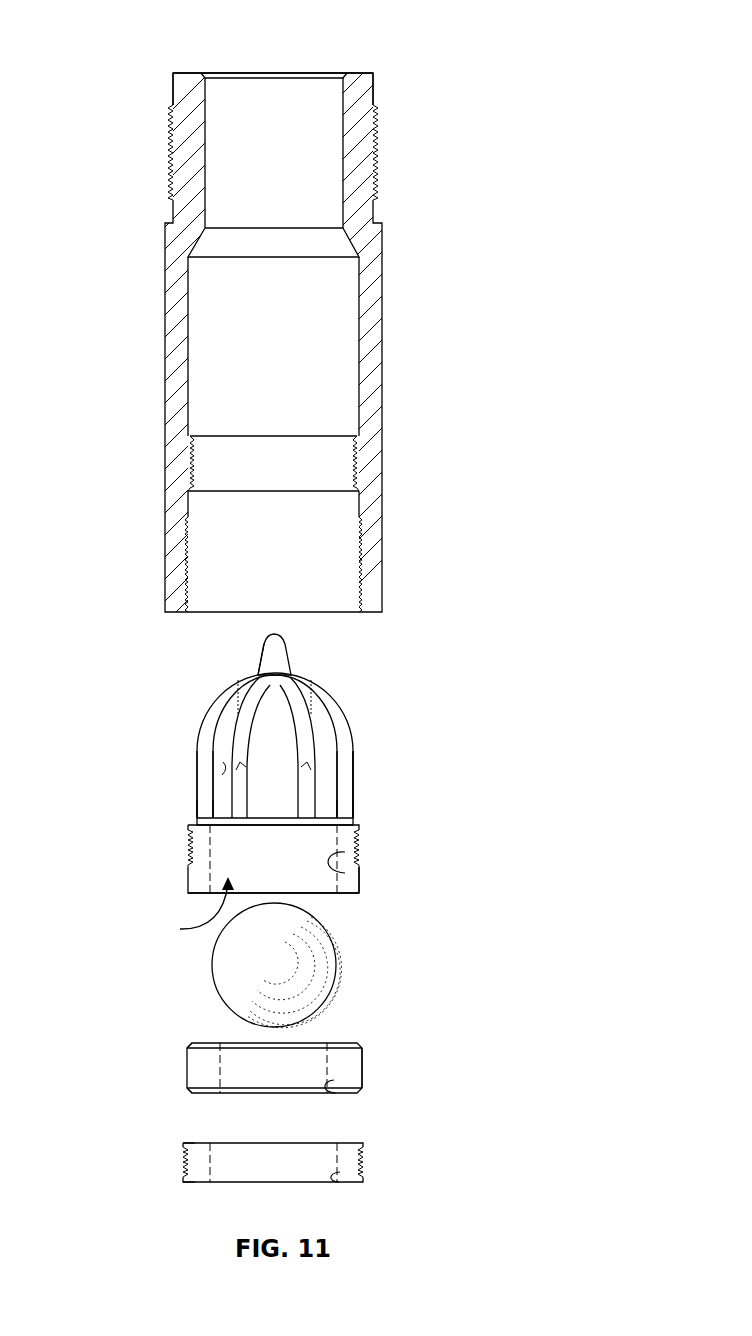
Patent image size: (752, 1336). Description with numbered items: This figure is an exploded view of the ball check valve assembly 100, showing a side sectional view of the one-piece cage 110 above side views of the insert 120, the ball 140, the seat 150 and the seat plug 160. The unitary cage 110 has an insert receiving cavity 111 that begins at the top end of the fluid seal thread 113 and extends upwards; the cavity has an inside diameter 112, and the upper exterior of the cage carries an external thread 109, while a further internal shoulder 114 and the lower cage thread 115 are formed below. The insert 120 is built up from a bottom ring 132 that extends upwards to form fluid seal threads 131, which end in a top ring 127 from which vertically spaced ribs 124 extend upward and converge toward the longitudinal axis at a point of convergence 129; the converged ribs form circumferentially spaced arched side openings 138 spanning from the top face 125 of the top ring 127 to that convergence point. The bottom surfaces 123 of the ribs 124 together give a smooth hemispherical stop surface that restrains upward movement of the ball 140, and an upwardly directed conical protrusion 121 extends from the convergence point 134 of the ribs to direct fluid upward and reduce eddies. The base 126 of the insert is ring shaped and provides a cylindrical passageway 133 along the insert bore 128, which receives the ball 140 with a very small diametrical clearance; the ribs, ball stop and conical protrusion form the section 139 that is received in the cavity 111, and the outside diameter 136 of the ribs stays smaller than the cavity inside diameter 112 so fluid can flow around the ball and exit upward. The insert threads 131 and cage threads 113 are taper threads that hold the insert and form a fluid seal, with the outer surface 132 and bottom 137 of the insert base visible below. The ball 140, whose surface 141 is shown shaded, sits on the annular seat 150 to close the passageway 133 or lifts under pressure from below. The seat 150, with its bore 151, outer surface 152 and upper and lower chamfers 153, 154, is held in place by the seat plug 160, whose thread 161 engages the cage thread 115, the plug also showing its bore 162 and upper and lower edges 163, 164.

The ball check valve assembly 100 is at (333, 55).
The external threads of upper portion 109 is at (379, 147).
The one-piece cage 110 is at (373, 100).
The insert receiving cavity 111 is at (292, 357).
The inside diameter of the cavity 112 is at (361, 312).
The fluid seal thread 113 is at (361, 449).
The lower shoulder of bore 114 is at (361, 516).
The cage thread 115 is at (361, 576).
The unitary insert 120 is at (372, 657).
The conical protrusion 121 is at (275, 648).
The bottom surface of the ribs 123 is at (222, 775).
The ribs 124 is at (220, 720).
The top face of the top ring 125 is at (198, 813).
The base 126 is at (173, 822).
The top ring 127 is at (357, 822).
The insert bore 128 is at (345, 852).
The point of convergence 129 is at (260, 683).
The fluid seal threads 131 is at (188, 842).
The bottom ring 132 is at (359, 886).
The cylindrical passageway 133 is at (187, 909).
The point of convergence of the ribs 134 is at (263, 673).
The outside diameter of the insert ribs 136 is at (352, 772).
The bottom surface of cage base 137 is at (348, 895).
The arched side openings 138 is at (240, 762).
The ribs, ball stop and conical protrusion forming section 139 is at (252, 643).
The ball 140 is at (224, 951).
The ball surface 141 is at (216, 998).
The seat 150 is at (357, 1035).
The seat ring bore 151 is at (334, 1093).
The seat ring outer surface 152 is at (360, 1063).
The seat ring upper chamfer 153 is at (205, 1042).
The seat ring lower chamfer 154 is at (205, 1093).
The seat plug 160 is at (357, 1138).
The seat plug thread 161 is at (366, 1163).
The retaining ring bore 162 is at (339, 1182).
The retaining ring upper edge 163 is at (203, 1141).
The retaining ring lower edge 164 is at (203, 1182).